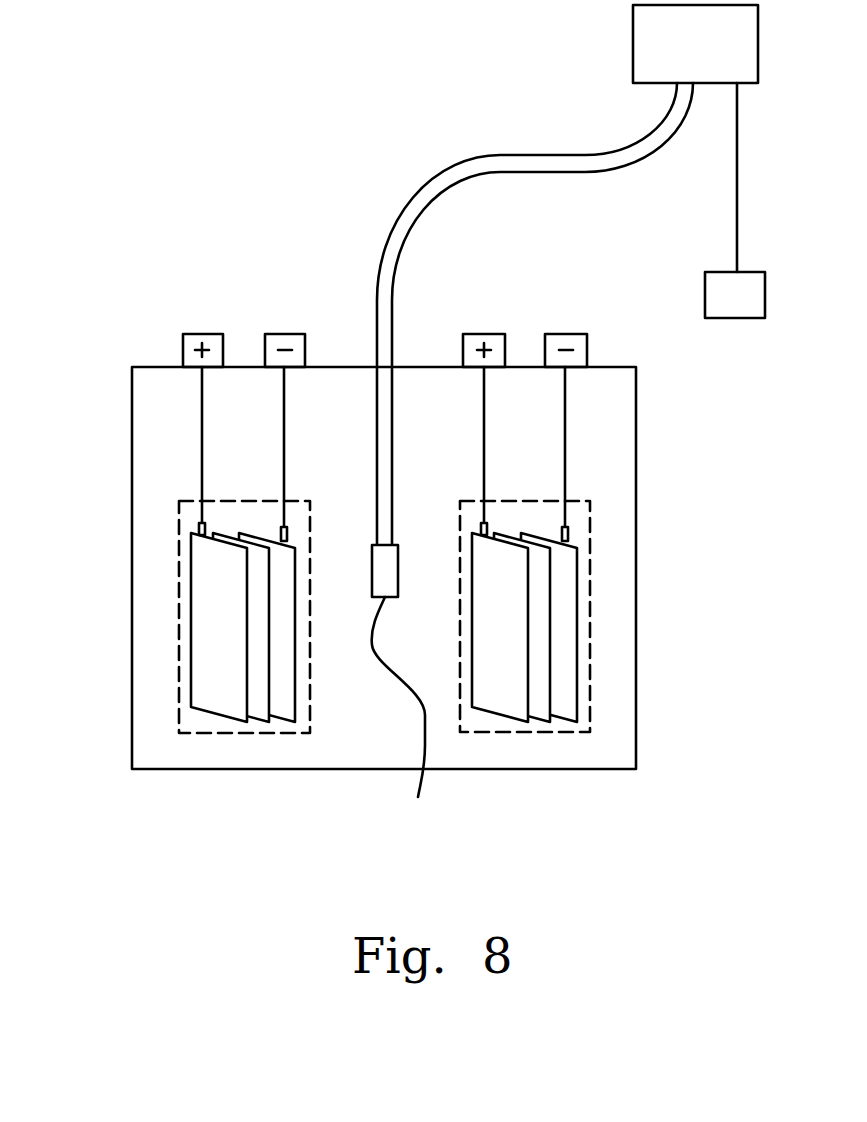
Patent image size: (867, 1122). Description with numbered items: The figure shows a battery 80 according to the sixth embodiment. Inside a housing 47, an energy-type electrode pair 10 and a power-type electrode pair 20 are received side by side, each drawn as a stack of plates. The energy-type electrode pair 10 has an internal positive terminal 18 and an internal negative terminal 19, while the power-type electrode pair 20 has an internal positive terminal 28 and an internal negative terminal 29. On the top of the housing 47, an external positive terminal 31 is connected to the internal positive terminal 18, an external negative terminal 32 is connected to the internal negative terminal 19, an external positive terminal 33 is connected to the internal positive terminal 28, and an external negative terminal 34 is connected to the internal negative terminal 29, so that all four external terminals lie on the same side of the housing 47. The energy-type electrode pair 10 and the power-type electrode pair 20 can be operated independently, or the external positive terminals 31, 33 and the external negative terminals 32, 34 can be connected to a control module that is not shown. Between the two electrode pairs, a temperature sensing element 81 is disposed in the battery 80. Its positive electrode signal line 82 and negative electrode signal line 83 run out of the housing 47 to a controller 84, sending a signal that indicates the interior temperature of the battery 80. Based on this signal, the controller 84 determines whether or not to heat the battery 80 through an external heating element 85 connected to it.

The battery 80 is at (170, 175).
The energy-type electrode pair 10 is at (200, 576).
The power-type electrode pair 20 is at (582, 558).
The internal positive terminal 18 is at (199, 528).
The internal negative terminal 19 is at (287, 535).
The internal positive terminal 28 is at (483, 526).
The internal negative terminal 29 is at (568, 533).
The external positive terminal 31 is at (202, 334).
The external negative terminal 32 is at (284, 334).
The external positive terminal 33 is at (484, 334).
The external negative terminal 34 is at (565, 334).
The housing 47 is at (637, 517).
The temperature sensing element 81 is at (400, 691).
The positive electrode signal line 82 is at (582, 155).
The negative electrode signal line 83 is at (668, 145).
The controller 84 is at (695, 58).
The external heating element 85 is at (735, 200).